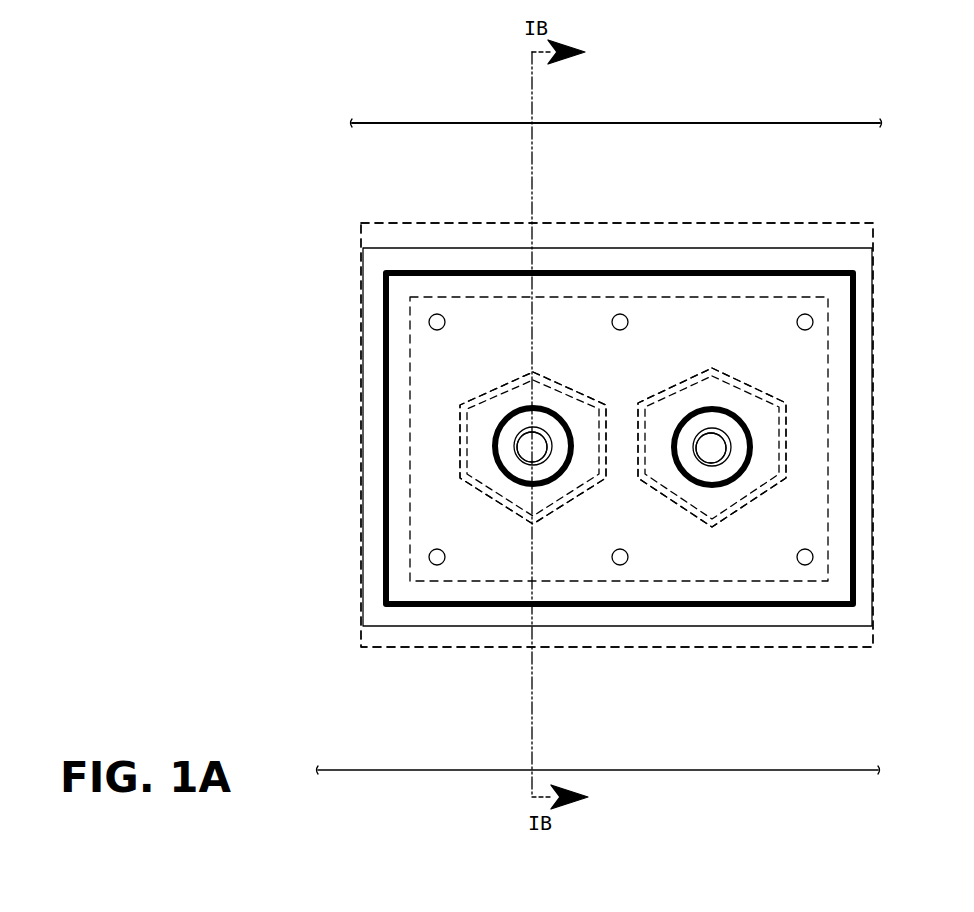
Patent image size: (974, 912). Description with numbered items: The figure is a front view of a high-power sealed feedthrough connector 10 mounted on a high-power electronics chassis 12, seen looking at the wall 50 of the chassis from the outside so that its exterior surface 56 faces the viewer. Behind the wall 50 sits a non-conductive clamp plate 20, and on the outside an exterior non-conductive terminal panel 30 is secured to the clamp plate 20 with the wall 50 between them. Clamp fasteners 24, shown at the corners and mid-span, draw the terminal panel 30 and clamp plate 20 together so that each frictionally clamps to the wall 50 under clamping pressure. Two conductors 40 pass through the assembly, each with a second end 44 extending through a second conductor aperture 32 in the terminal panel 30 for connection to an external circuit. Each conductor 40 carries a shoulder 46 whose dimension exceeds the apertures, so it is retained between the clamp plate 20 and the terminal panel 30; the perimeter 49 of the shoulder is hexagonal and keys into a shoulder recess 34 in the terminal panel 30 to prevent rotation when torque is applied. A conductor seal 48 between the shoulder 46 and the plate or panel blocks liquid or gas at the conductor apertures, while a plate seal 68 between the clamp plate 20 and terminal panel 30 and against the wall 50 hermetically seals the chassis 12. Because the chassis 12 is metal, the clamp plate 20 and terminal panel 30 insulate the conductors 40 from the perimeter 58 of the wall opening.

The high-power sealed feedthrough connector 10 is at (690, 81).
The high-power electronics chassis 12 is at (782, 123).
The non-conductive clamp plate 20 is at (700, 223).
The clamp fasteners 24 is at (429, 318).
The exterior non-conductive terminal panel 30 is at (738, 248).
The second conductor aperture 32 is at (548, 431).
The shoulder recess 34 is at (545, 371).
The conductor 40 is at (546, 452).
The second end 44 is at (538, 452).
The shoulder 46 is at (498, 395).
The conductor seal 48 is at (497, 437).
The perimeter of the shoulder 49 is at (620, 434).
The wall 50 is at (378, 148).
The exterior surface 56 is at (616, 93).
The perimeter 58 is at (828, 410).
The plate seal 68 is at (856, 325).